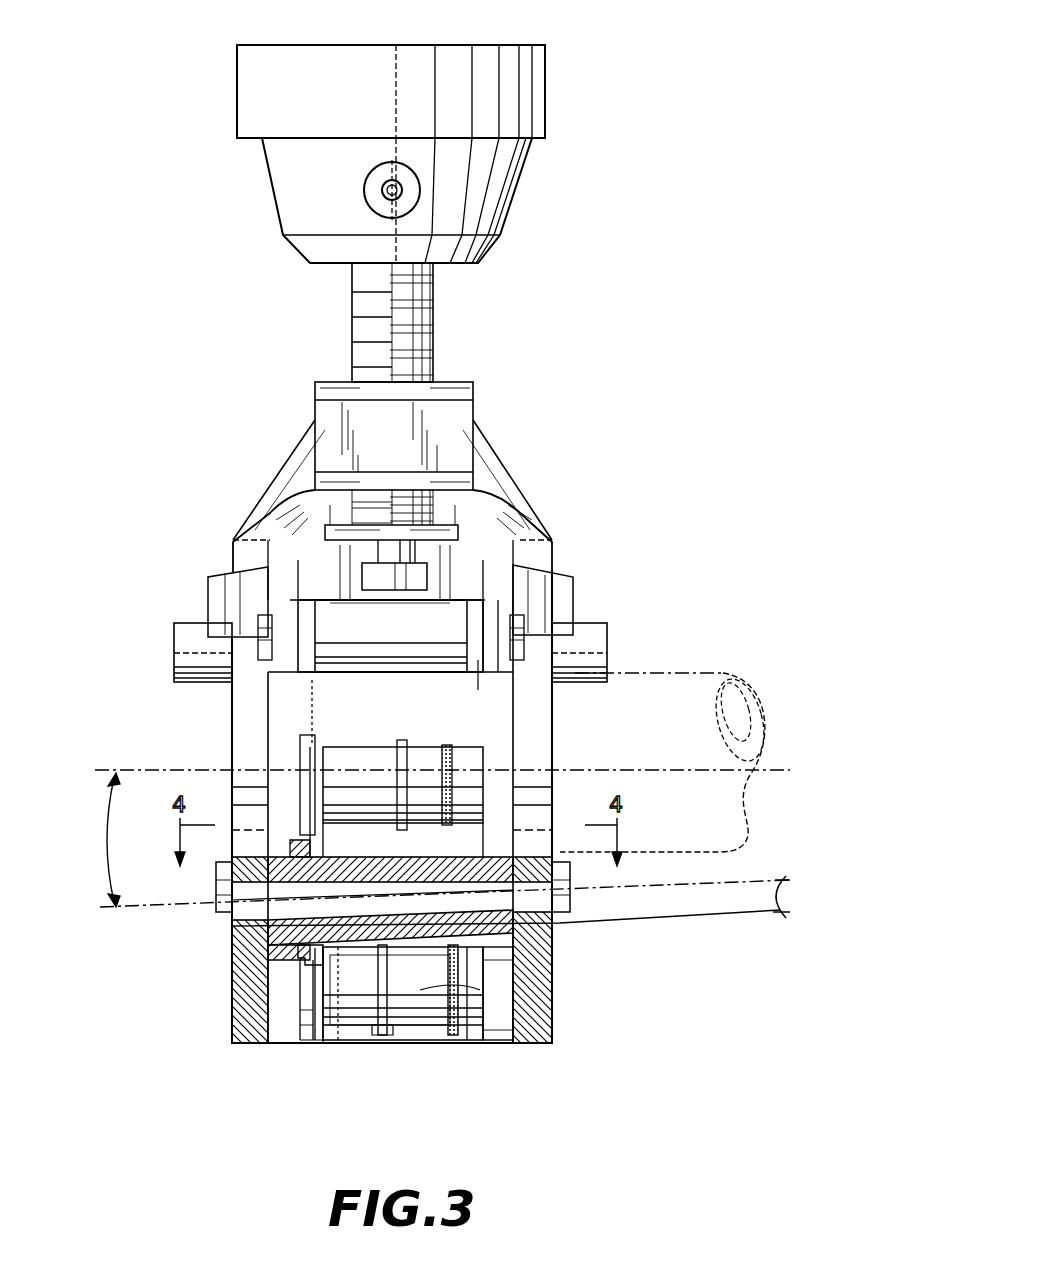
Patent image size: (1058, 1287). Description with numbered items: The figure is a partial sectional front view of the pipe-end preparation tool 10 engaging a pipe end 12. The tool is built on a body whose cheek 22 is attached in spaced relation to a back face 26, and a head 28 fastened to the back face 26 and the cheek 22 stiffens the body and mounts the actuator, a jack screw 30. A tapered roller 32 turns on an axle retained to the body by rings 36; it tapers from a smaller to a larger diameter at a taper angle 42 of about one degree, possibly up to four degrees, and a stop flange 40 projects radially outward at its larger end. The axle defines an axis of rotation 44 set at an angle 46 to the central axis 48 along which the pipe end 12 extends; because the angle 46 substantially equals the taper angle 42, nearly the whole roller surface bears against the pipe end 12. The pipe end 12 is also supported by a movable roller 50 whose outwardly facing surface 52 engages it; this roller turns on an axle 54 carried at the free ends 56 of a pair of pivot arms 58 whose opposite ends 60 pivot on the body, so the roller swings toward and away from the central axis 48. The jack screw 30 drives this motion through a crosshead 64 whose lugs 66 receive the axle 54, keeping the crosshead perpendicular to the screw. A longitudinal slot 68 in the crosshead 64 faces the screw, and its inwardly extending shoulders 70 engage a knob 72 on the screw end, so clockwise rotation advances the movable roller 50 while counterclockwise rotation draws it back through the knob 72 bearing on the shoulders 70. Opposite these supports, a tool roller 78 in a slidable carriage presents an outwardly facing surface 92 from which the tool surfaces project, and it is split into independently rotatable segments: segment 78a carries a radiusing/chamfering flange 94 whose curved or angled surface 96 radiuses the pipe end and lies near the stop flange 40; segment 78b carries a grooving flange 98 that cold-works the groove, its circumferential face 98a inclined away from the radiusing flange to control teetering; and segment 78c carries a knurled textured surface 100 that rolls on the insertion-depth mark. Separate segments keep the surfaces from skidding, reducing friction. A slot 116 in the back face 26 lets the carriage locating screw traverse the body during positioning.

The tool 10 is at (668, 92).
The pipe end 12 is at (693, 673).
The cheek 22 is at (552, 1020).
The back face 26 is at (330, 697).
The head 28 is at (488, 468).
The jack screw 30 is at (358, 318).
The tapered roller 32 is at (468, 938).
The rings 36 is at (578, 915).
The stop flange 40 is at (300, 958).
The taper angle 42 is at (790, 891).
The axis of rotation 44 is at (745, 880).
The angle 46 is at (108, 845).
The central axis 48 is at (778, 770).
The movable roller 50 is at (345, 622).
The outwardly facing surface 52 is at (330, 630).
The axle 54 is at (520, 650).
The free ends 56 is at (498, 620).
The pivot arms 58 is at (550, 585).
The opposite ends 60 is at (258, 662).
The crosshead 64 is at (368, 553).
The lugs 66 is at (478, 672).
The longitudinal slot 68 is at (353, 580).
The shoulders 70 is at (335, 527).
The knob 72 is at (408, 577).
The tool roller 78 is at (352, 1065).
The tool roller segment 78a is at (330, 1045).
The tool roller segment 78b is at (485, 975).
The tool roller segment 78c is at (470, 988).
The outwardly facing surface 92 is at (367, 1027).
The radiusing/chamfering flange 94 is at (300, 1000).
The curved or angled surface 96 is at (320, 1040).
The grooving flange 98 is at (392, 1015).
The circumferential face 98a is at (420, 1040).
The textured surface 100 is at (447, 1040).
The slot 116 is at (395, 712).